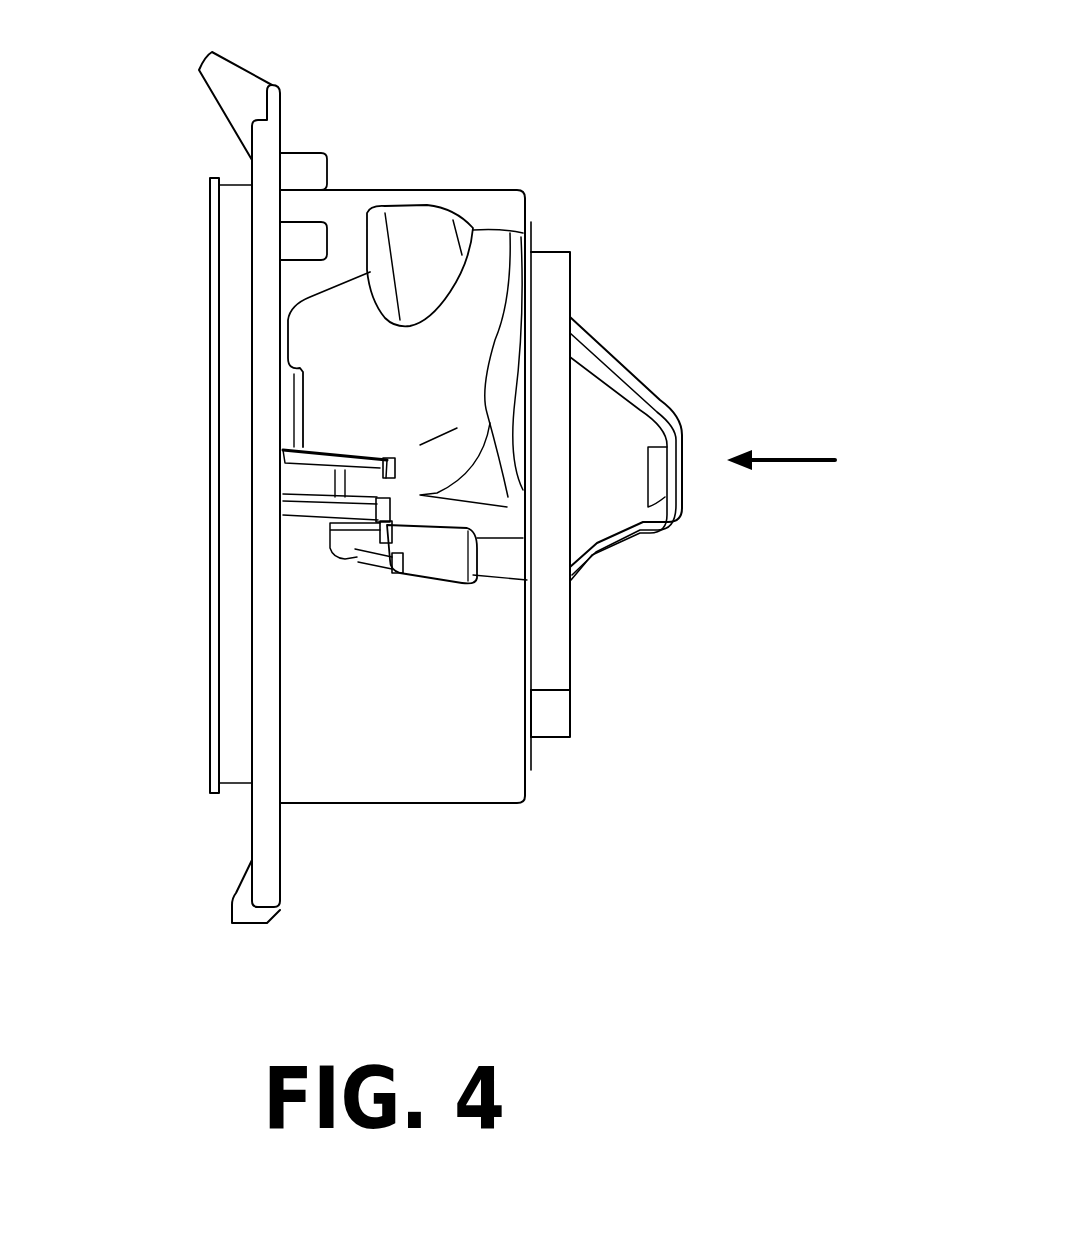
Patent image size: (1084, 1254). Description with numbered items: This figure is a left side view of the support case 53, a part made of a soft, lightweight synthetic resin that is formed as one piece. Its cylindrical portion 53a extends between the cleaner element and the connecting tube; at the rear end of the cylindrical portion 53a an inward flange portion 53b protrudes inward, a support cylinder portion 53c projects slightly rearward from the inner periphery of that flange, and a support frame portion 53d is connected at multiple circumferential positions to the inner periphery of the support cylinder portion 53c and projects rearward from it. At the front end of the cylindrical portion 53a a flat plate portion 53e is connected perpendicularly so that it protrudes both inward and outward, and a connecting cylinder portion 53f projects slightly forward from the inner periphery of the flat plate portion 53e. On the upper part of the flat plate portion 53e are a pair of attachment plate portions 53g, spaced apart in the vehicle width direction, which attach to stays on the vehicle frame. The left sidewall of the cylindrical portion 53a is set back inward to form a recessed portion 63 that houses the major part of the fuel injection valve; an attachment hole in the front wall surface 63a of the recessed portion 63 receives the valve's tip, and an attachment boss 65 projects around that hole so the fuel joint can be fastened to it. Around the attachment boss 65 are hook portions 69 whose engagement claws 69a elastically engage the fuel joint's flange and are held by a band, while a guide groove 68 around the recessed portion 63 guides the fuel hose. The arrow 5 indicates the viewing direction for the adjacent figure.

The viewing direction arrow for FIG. 5 is at (804, 458).
The support case 53 is at (447, 185).
The cylindrical portion 53a is at (372, 785).
The inward flange portion 53b is at (532, 690).
The support cylinder portion 53c is at (548, 653).
The support frame portion 53d is at (622, 372).
The flat plate portion 53e is at (262, 815).
The connecting cylinder portion 53f is at (210, 668).
The attachment plate portions 53g is at (238, 90).
The recessed portion 63 is at (488, 523).
The front wall surface 63a is at (297, 423).
The attachment boss 65 is at (333, 480).
The guide groove 68 is at (435, 257).
The hook portions 69 is at (330, 447).
The engagement claws 69a is at (384, 503).